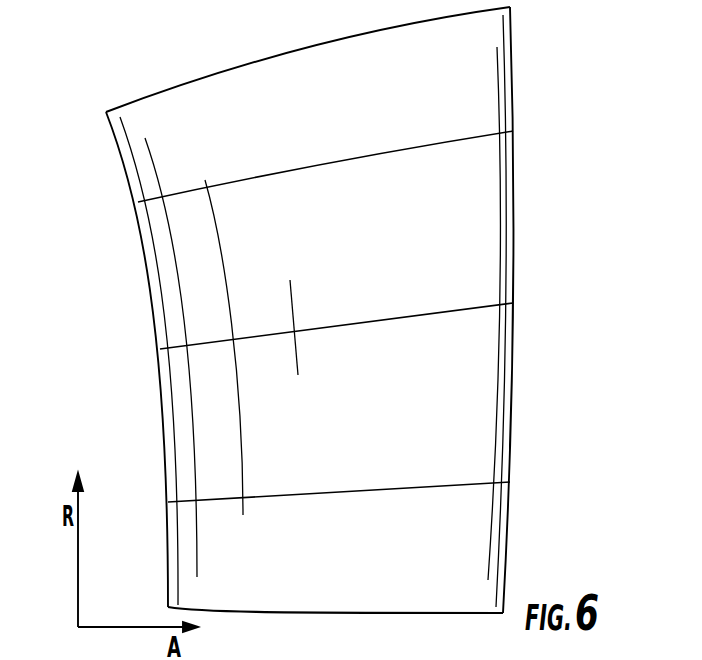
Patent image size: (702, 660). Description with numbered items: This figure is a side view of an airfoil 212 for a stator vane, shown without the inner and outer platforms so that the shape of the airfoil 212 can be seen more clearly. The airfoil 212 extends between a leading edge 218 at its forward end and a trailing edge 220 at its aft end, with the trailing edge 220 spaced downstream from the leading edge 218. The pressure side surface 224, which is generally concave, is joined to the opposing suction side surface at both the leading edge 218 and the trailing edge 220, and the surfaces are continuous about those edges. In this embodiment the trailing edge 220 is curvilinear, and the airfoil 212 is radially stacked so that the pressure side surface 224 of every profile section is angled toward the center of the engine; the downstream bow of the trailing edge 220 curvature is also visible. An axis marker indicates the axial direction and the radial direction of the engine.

The airfoil 212 is at (311, 310).
The leading edge 218 is at (150, 272).
The trailing edge 220 is at (515, 285).
The pressure side surface 224 is at (358, 222).